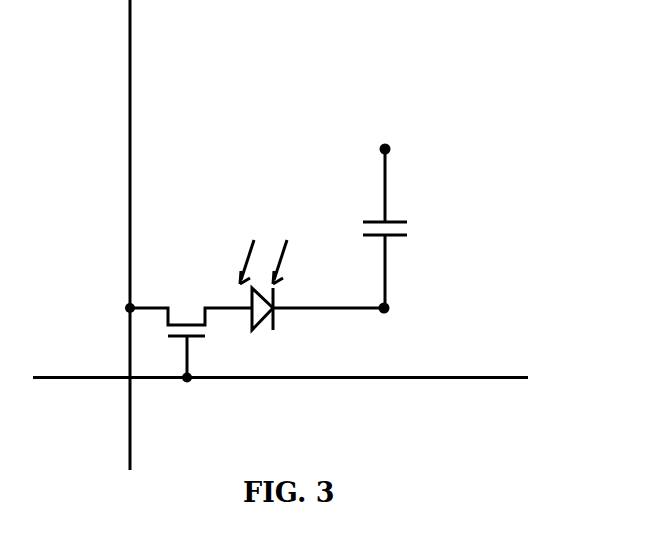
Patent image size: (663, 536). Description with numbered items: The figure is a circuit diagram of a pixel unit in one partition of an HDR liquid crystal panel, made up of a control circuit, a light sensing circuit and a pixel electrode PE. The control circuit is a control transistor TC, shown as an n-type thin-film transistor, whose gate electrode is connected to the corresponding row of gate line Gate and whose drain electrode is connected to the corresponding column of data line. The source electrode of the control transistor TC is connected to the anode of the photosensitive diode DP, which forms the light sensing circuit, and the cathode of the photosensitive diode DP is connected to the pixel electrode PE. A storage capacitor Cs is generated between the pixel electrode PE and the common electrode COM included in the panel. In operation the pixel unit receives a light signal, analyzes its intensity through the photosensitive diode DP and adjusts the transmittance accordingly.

The control transistor TC is at (191, 320).
The photosensitive diode DP is at (310, 303).
The pixel electrode PE is at (383, 327).
The storage capacitor Cs is at (401, 228).
The common electrode COM is at (385, 133).
The gate line Gate is at (279, 363).